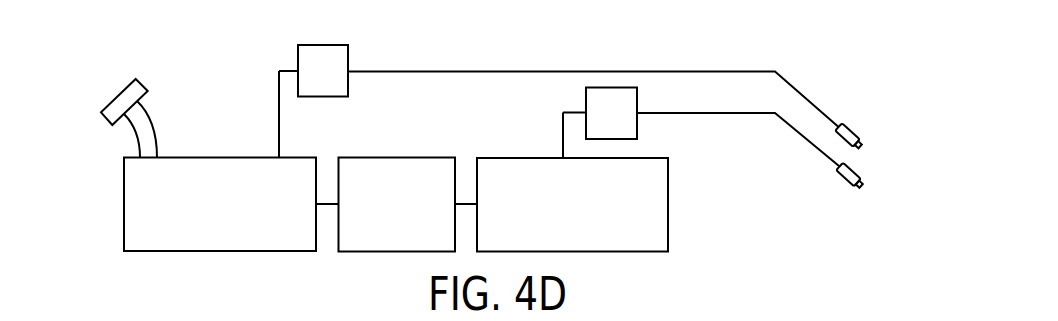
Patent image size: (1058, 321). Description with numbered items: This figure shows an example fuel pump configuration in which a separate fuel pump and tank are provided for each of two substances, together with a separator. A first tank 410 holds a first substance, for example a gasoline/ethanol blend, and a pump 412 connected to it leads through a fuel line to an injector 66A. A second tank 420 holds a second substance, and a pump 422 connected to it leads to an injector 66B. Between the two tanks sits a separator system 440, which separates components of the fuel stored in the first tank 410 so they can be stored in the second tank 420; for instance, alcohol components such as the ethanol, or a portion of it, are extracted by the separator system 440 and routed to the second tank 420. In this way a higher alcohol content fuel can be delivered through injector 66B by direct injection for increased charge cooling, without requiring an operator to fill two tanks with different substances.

The first tank 410 is at (124, 202).
The pump 412 is at (321, 45).
The separator system 440 is at (391, 158).
The second tank 420 is at (668, 203).
The pump 422 is at (637, 123).
The injector 66A is at (863, 187).
The injector 66B is at (862, 147).